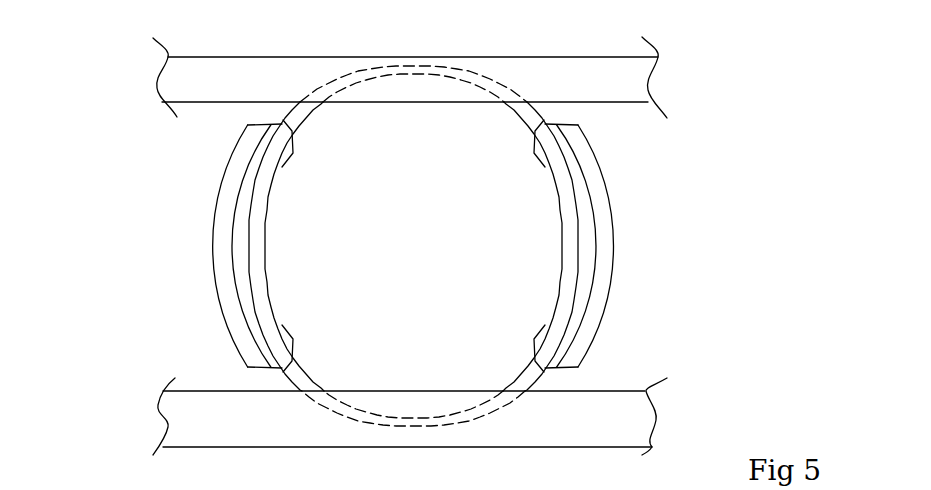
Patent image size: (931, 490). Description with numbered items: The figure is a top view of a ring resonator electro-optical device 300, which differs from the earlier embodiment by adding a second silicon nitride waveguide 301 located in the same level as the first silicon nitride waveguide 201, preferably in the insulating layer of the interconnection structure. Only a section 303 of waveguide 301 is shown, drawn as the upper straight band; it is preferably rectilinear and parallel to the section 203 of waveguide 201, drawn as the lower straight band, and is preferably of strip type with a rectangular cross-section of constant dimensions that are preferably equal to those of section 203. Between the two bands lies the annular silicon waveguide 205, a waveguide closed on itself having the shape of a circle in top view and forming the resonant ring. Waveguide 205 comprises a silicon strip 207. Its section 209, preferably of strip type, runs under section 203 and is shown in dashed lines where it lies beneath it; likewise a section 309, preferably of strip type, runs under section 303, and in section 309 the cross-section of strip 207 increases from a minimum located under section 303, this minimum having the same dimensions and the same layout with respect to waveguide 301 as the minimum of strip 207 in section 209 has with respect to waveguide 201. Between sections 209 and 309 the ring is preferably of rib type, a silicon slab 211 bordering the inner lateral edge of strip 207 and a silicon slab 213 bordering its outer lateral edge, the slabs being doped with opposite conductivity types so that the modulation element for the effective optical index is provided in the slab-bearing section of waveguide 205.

The ring resonator electro-optical device 300 is at (136, 120).
The silicon nitride waveguide 301 is at (686, 82).
The section of waveguide 301 303 is at (607, 91).
The section of waveguide 205 309 is at (497, 87).
The silicon nitride waveguide 201 is at (686, 417).
The longitudinal section of waveguide 201 203 is at (607, 423).
The section of waveguide 205 209 is at (480, 418).
The annular silicon waveguide 205 is at (630, 224).
The silicon strip 207 is at (581, 186).
The silicon slab 211 is at (262, 221).
The silicon slab 213 is at (212, 223).